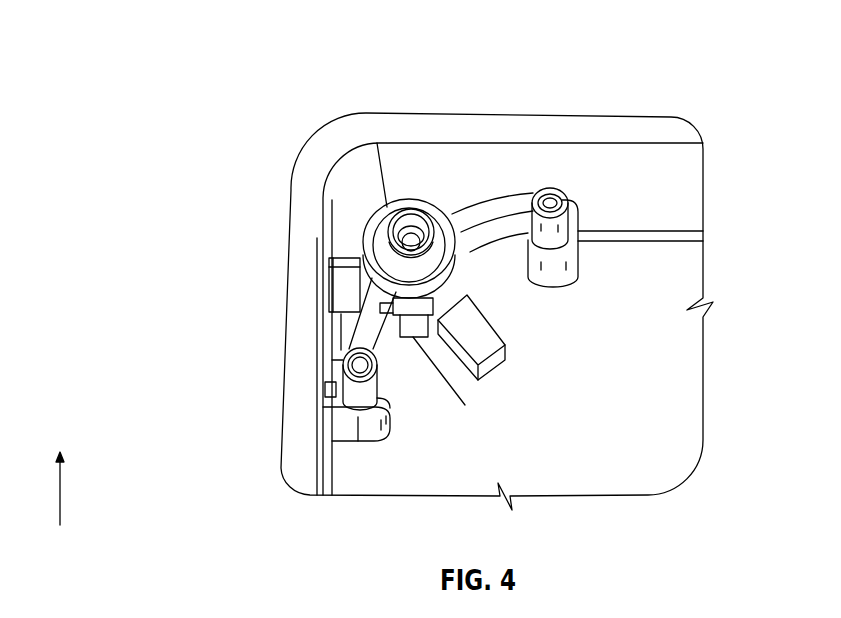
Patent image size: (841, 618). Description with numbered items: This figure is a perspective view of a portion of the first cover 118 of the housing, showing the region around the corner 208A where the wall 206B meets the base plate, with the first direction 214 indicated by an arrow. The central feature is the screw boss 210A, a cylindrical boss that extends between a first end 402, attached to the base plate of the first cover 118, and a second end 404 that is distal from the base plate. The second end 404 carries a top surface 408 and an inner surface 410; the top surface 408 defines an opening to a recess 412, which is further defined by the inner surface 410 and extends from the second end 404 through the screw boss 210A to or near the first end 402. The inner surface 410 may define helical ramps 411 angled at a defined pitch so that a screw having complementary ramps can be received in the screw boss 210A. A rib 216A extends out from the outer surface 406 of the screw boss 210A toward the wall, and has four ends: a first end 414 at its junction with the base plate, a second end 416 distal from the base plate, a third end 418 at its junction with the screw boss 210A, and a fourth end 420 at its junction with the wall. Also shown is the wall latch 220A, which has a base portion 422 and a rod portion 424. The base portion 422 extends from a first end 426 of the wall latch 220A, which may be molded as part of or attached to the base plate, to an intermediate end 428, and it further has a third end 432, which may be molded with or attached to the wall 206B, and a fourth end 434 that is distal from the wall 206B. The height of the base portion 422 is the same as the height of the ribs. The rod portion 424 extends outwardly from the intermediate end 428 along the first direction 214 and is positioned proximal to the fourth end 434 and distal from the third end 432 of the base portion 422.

The corner 208A is at (330, 143).
The wall 206B is at (288, 190).
The screw boss 210A is at (323, 198).
The second end 416 is at (353, 257).
The rib 216A is at (323, 259).
The helical ramps 411 is at (313, 297).
The third end 418 is at (331, 311).
The first end 414 is at (350, 314).
The fourth end 420 is at (335, 330).
The rod portion 424 is at (336, 371).
The third end 432 is at (330, 420).
The first cover 118 is at (292, 465).
The first direction 214 is at (60, 489).
The wall latch 220A is at (342, 435).
The inner surface 410 is at (395, 205).
The top surface 408 is at (429, 200).
The second end 404 is at (437, 214).
The recess 412 is at (470, 197).
The intermediate end 428 is at (395, 396).
The outer surface 406 is at (478, 382).
The first end 402 is at (432, 339).
The fourth end 434 is at (392, 418).
The base portion 422 is at (373, 440).
The first end 426 is at (358, 457).